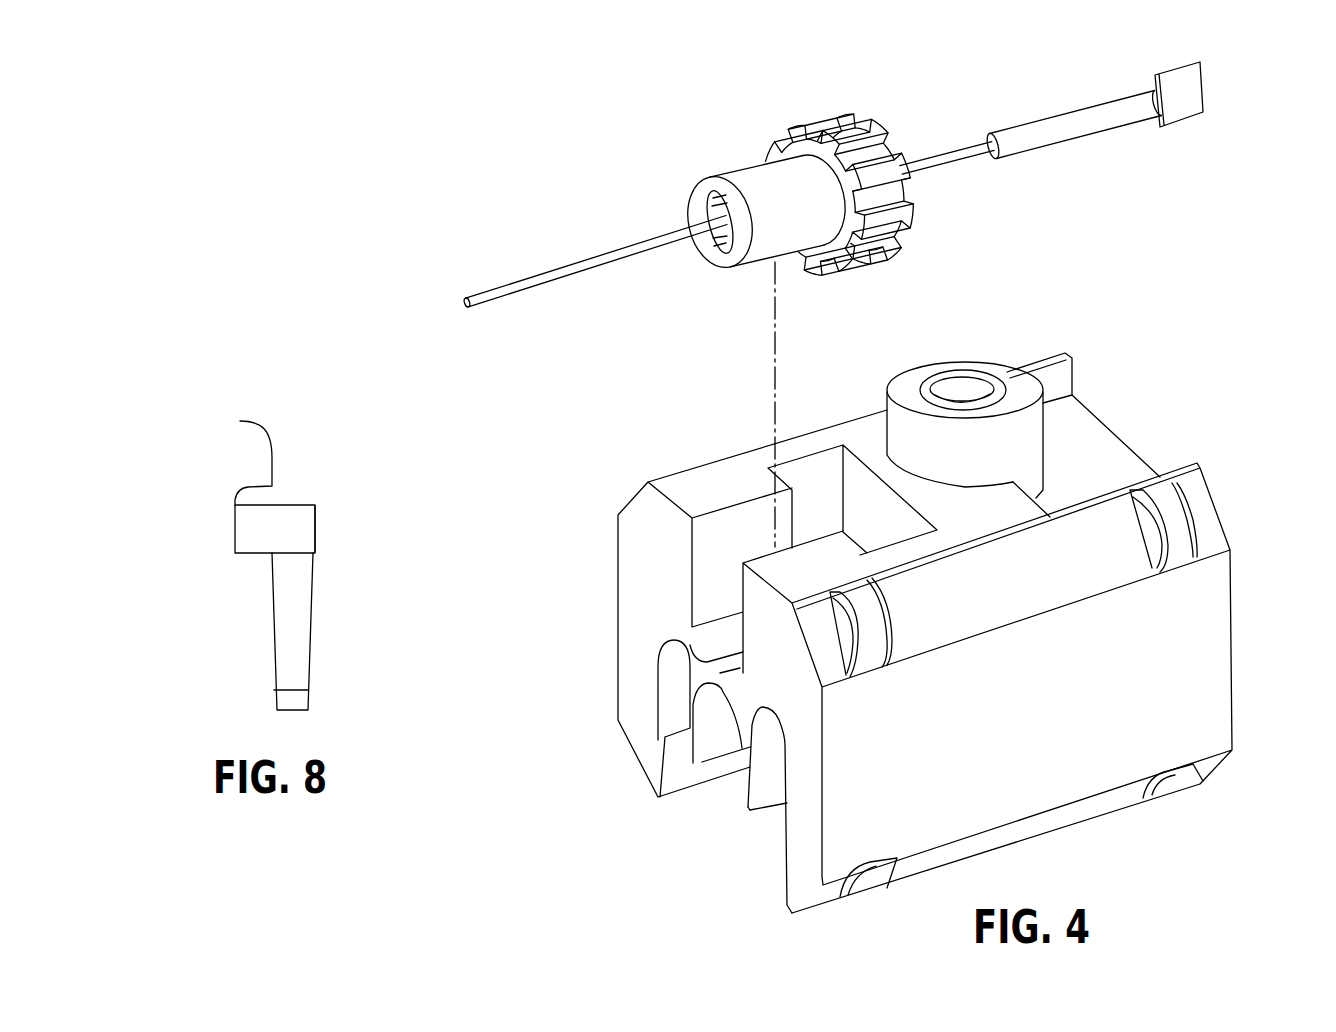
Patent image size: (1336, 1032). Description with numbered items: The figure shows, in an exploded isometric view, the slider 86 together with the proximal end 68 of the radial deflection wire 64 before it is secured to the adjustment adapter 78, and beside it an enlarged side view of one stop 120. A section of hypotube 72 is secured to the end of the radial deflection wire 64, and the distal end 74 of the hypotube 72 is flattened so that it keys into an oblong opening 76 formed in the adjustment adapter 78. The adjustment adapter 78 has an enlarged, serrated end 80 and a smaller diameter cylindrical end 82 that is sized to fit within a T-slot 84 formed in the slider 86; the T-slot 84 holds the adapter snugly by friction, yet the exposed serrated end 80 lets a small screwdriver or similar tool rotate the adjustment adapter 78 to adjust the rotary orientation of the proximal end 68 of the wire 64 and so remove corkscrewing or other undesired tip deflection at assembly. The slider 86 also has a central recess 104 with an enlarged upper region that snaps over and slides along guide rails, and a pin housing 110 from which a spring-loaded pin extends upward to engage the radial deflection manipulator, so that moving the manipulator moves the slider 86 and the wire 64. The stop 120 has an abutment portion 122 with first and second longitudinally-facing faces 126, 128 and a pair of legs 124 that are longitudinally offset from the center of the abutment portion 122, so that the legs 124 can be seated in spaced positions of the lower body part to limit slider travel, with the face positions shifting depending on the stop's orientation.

In FIG. 4, the radial deflection wire 64 is at (563, 272).
In FIG. 4, the proximal end of radial deflection wire 68 is at (948, 158).
In FIG. 4, the hypotube 72 is at (1067, 118).
In FIG. 4, the distal end of hypotube 74 is at (1182, 127).
In FIG. 4, the oblong opening 76 is at (717, 198).
In FIG. 4, the adjustment adapter 78 is at (829, 185).
In FIG. 4, the serrated end 80 is at (866, 268).
In FIG. 4, the cylindrical end 82 is at (763, 182).
In FIG. 4, the T-slot 84 is at (752, 532).
In FIG. 4, the slider 86 is at (962, 633).
In FIG. 4, the central recess 104 is at (703, 838).
In FIG. 4, the pin housing 110 is at (897, 398).
In FIG. 8, the stop 120 is at (252, 559).
In FIG. 8, the abutment portion 122 is at (240, 421).
In FIG. 8, the legs 124 is at (272, 628).
In FIG. 8, the first longitudinally-facing face 126 is at (233, 530).
In FIG. 8, the second longitudinally-facing face 128 is at (317, 522).